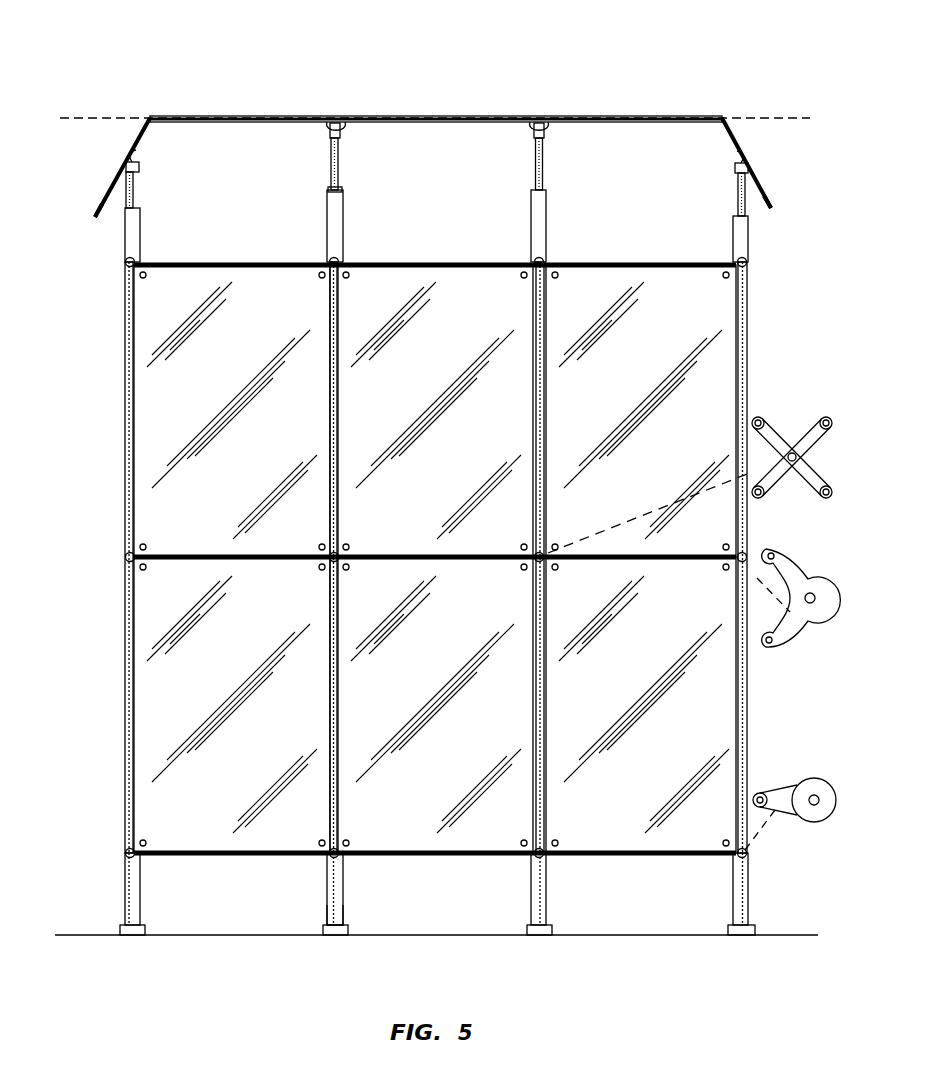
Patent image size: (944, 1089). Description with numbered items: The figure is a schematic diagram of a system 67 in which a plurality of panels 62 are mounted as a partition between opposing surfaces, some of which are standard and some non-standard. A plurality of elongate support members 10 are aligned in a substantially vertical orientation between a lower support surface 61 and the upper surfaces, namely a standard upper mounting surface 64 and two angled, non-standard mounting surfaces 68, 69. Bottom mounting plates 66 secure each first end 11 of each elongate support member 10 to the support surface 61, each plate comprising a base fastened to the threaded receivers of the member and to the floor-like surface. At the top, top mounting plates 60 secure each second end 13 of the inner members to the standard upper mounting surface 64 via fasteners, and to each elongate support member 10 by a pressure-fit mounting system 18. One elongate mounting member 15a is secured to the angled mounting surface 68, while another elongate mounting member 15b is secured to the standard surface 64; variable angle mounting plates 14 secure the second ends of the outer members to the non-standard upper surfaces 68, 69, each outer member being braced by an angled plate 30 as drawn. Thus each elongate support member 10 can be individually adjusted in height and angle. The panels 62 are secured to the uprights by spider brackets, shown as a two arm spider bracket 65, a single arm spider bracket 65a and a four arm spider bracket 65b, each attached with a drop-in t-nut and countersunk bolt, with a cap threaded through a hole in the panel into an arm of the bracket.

The elongate support member 10 is at (140, 893).
The first end 11 is at (327, 917).
The second end 13 is at (342, 188).
The variable angle mounting plate 14 is at (142, 168).
The elongate mounting member 15a is at (120, 377).
The elongate mounting member 15b is at (347, 222).
The pressure-fit mounting system 18 is at (319, 174).
The diagonal brace 30 is at (96, 125).
The top mounting plate 60 is at (347, 128).
The support surface 61 is at (100, 930).
The panel 62 is at (683, 418).
The upper mounting surface 64 is at (425, 117).
The two arm spider bracket 65 is at (748, 556).
The single arm spider bracket 65a is at (782, 808).
The four arm spider bracket 65b is at (796, 440).
The bottom mounting plate 66 is at (346, 936).
The system 67 is at (561, 72).
The non-standard mounting surface 68 is at (96, 216).
The non-standard mounting surface 69 is at (771, 210).